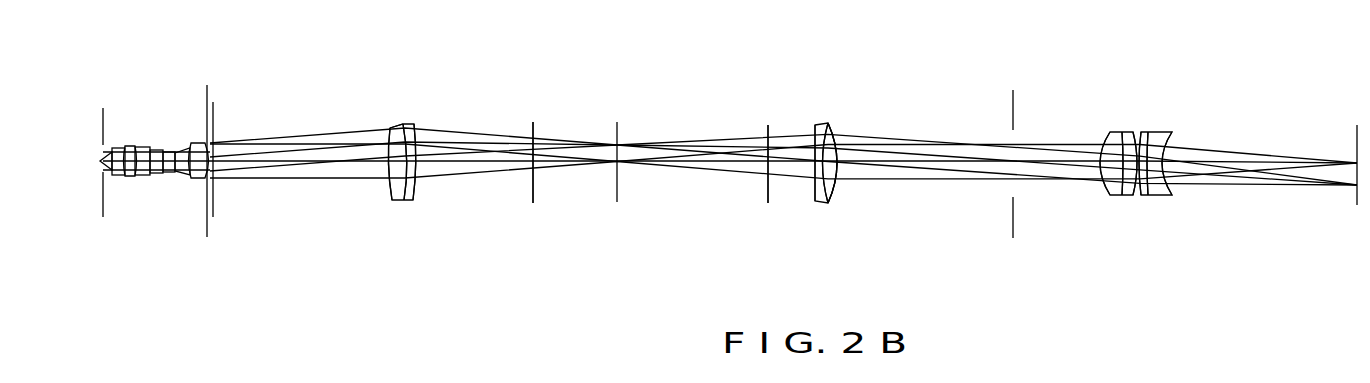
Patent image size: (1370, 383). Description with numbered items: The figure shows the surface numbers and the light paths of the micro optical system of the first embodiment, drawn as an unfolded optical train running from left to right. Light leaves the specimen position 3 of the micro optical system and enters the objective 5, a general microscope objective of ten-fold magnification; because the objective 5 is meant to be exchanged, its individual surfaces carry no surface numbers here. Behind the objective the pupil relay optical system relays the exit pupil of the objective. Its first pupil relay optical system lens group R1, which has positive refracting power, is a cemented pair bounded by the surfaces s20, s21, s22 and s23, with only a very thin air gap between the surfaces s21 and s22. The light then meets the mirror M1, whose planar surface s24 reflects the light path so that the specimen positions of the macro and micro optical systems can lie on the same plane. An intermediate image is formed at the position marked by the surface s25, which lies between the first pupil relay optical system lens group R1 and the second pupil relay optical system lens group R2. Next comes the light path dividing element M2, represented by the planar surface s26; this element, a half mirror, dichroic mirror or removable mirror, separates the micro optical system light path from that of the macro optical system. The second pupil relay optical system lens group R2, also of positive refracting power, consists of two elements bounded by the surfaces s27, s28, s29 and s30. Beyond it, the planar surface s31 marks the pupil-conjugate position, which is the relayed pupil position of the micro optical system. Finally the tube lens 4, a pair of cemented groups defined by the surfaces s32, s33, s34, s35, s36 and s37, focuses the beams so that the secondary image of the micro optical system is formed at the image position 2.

The image position 2 is at (1357, 207).
The specimen position 3 is at (103, 217).
The tube lens 4 is at (1183, 200).
The objective 5 is at (200, 192).
The first pupil relay optical system lens group R1 is at (402, 203).
The second pupil relay optical system lens group R2 is at (826, 205).
The mirror M1 is at (533, 210).
The light path dividing element M2 is at (768, 210).
The surface number 20 s20 is at (388, 135).
The surface number 21 s21 is at (389, 125).
The surface number 22 s22 is at (407, 123).
The surface number 23 s23 is at (414, 123).
The surface number 24 s24 is at (535, 121).
The surface number 25 s25 is at (619, 125).
The surface number 26 s26 is at (765, 127).
The surface number 27 s27 is at (815, 130).
The surface number 28 s28 is at (827, 123).
The surface number 29 s29 is at (838, 128).
The surface number 30 s30 is at (845, 150).
The surface number 31 s31 is at (1013, 112).
The surface number 32 s32 is at (1100, 153).
The surface number 33 s33 is at (1115, 133).
The surface number 34 s34 is at (1133, 131).
The surface number 35 s35 is at (1144, 131).
The surface number 36 s36 is at (1157, 137).
The surface number 37 s37 is at (1167, 152).